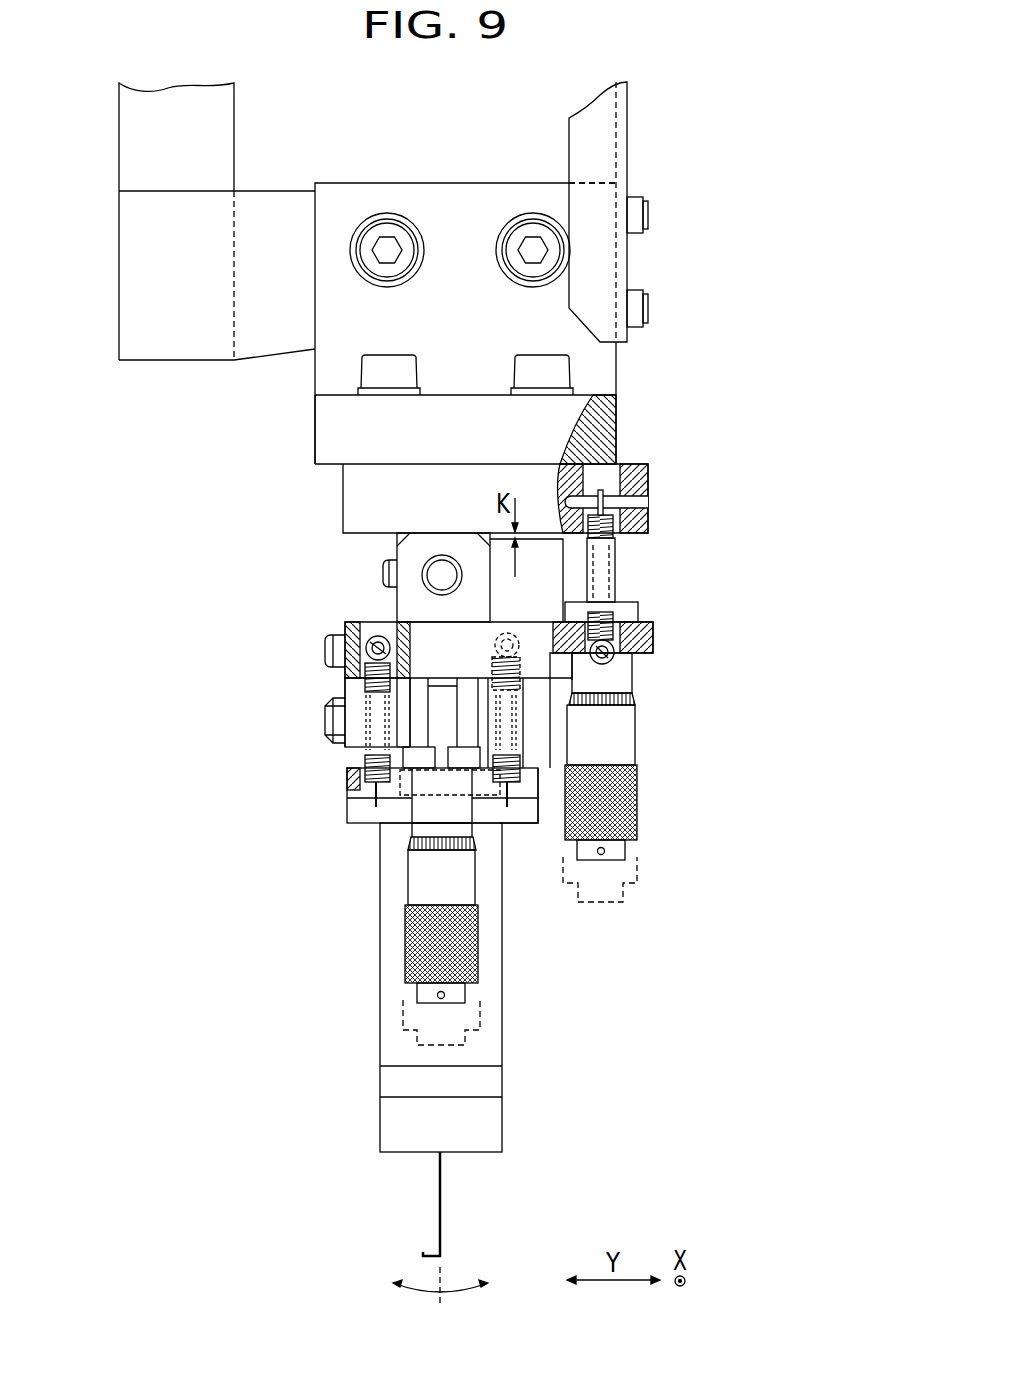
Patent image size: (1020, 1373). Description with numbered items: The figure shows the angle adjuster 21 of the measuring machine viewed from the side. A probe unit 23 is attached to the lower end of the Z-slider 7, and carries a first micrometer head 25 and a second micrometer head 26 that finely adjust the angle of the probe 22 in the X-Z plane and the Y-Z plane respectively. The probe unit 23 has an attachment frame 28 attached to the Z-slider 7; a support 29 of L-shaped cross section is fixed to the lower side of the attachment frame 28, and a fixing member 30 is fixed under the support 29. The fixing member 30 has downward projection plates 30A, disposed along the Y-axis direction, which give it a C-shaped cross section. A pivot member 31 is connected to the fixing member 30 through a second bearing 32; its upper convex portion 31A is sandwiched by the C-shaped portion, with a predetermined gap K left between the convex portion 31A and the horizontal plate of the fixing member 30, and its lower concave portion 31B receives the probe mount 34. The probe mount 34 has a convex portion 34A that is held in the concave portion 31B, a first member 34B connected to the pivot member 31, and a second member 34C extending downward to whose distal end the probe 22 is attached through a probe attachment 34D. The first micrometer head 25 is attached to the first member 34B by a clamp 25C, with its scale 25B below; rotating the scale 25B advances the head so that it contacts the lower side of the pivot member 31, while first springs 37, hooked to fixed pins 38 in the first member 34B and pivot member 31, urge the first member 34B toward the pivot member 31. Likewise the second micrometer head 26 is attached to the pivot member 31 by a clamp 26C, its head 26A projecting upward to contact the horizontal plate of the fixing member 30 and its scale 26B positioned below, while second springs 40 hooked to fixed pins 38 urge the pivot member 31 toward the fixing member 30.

The Z-slider 7 is at (133, 131).
The attachment frame 28 is at (190, 343).
The probe unit 23 is at (313, 440).
The support 29 is at (603, 368).
The fixing member 30 is at (638, 462).
The projection plate 30A is at (393, 530).
The second bearing 32 is at (382, 577).
The pivot member 31 is at (643, 635).
The convex portion 31A is at (403, 603).
The concave portion 31B is at (468, 725).
The first springs 37 is at (365, 688).
The fixed pins 38 is at (347, 643).
The second springs 40 is at (612, 522).
The second micrometer head 26 is at (637, 783).
The head 26A is at (618, 567).
The scale 26B is at (627, 717).
The clamp 26C is at (635, 613).
The first micrometer head 25 is at (405, 947).
The scale 25B is at (412, 887).
The clamp 25C is at (358, 747).
The probe mount 34 is at (502, 1047).
The convex portion 34A is at (538, 770).
The first member 34B is at (548, 823).
The second member 34C is at (493, 990).
The probe attachment 34D is at (490, 1125).
The probe 22 is at (440, 1210).
The angle adjuster 21 is at (240, 806).